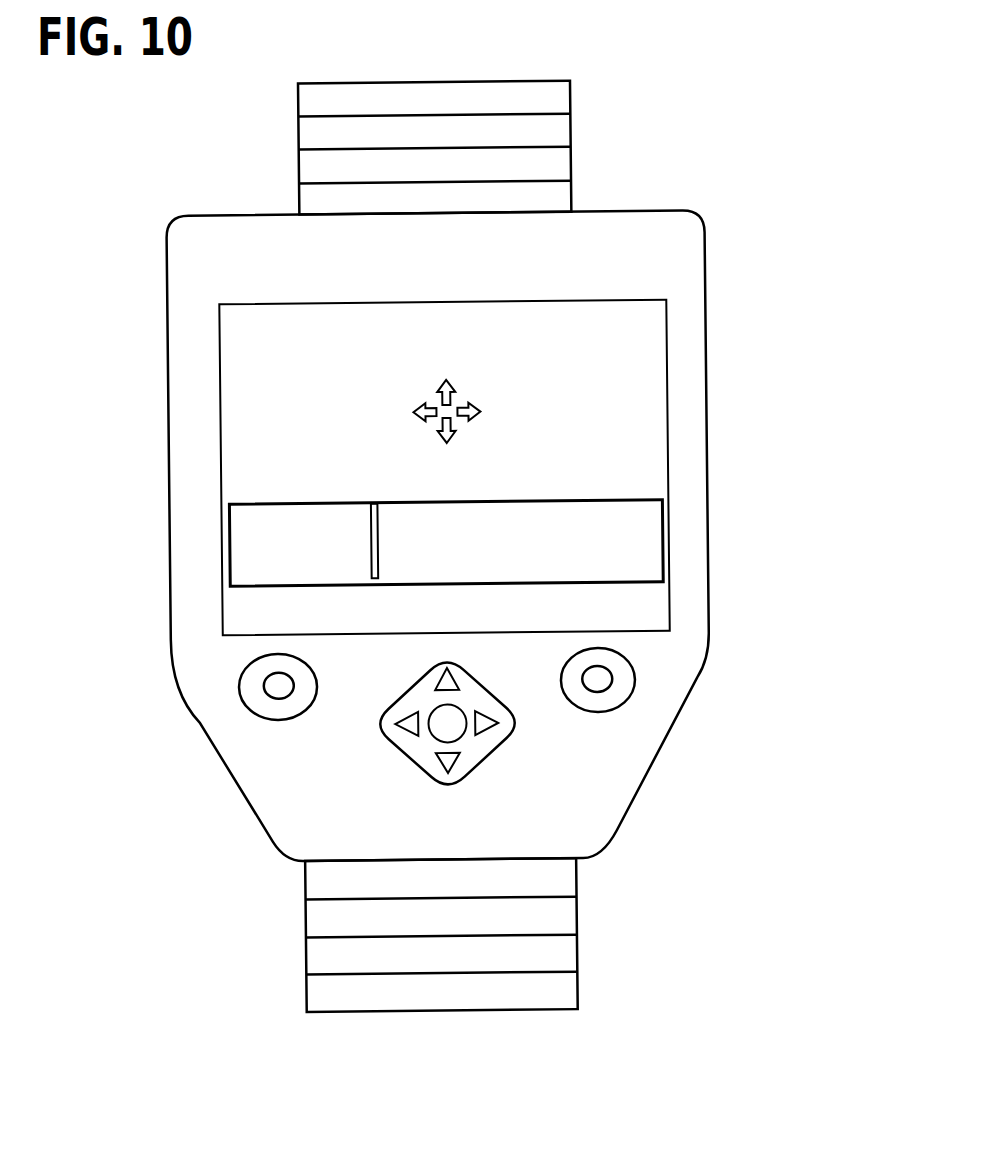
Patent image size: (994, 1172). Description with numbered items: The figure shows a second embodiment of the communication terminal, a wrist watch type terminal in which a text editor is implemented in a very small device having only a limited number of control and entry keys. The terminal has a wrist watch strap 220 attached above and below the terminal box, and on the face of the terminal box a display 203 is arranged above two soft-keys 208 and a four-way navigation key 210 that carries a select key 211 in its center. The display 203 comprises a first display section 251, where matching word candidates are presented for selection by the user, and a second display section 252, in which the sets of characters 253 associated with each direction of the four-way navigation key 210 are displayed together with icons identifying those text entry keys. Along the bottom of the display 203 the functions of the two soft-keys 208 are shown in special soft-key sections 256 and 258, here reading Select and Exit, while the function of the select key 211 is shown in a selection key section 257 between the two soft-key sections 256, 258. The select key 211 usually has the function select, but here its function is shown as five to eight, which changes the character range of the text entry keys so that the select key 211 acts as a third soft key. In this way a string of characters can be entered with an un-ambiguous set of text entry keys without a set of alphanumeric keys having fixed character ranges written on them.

The display 203 is at (250, 334).
The wrist watch strap 220 is at (564, 201).
The second display section 252 is at (624, 374).
The sets of characters 253 is at (485, 345).
The first display section 251 is at (580, 551).
The soft-key section 256 is at (258, 604).
The selection key section 257 is at (446, 622).
The soft-key section 258 is at (614, 624).
The soft-keys 208 is at (242, 693).
The four-way navigation key 210 is at (505, 708).
The select key 211 is at (446, 727).